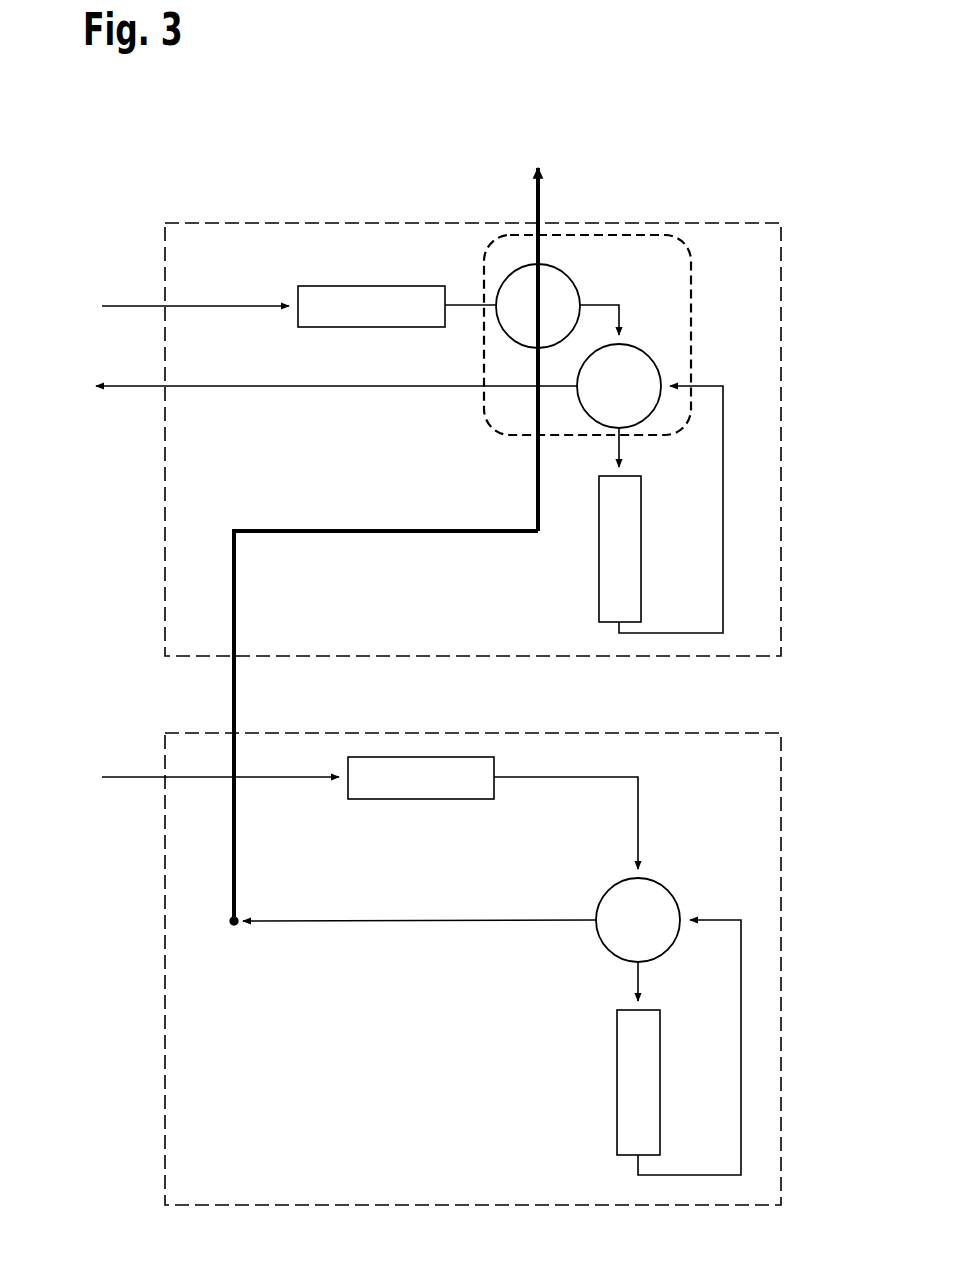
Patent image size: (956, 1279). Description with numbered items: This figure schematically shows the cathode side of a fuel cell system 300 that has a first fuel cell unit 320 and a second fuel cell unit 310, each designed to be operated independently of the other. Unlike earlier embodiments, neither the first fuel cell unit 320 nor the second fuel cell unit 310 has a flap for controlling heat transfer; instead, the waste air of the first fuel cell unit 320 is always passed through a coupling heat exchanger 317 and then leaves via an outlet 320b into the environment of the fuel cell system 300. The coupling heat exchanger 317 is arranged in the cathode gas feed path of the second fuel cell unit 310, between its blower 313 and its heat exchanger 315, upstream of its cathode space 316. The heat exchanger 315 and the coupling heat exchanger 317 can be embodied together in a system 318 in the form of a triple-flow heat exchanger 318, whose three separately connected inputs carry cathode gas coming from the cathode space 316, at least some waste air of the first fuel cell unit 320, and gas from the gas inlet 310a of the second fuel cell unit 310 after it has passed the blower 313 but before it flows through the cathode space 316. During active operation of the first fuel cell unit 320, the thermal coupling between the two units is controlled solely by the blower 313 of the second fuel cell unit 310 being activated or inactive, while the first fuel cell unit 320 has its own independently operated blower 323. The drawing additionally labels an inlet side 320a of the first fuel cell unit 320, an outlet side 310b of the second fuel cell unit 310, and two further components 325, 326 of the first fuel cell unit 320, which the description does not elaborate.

The fuel cell system 300 is at (750, 192).
The second fuel cell unit 310 is at (165, 585).
The gas inlet of the second fuel cell unit 310a is at (130, 303).
The first output 310b is at (130, 390).
The blower of the second fuel cell unit 313 is at (372, 286).
The heat exchanger of the second fuel cell unit 315 is at (648, 353).
The cathode space of the second fuel cell unit 316 is at (599, 577).
The coupling heat exchanger 317 is at (579, 290).
The triple-flow heat exchanger 318 is at (489, 237).
The first fuel cell unit 320 is at (165, 1133).
The second input 320a is at (130, 780).
The outlet 320b is at (538, 193).
The blower 323 is at (420, 799).
The second summing node 325 is at (663, 882).
The second feedback unit 326 is at (617, 1080).